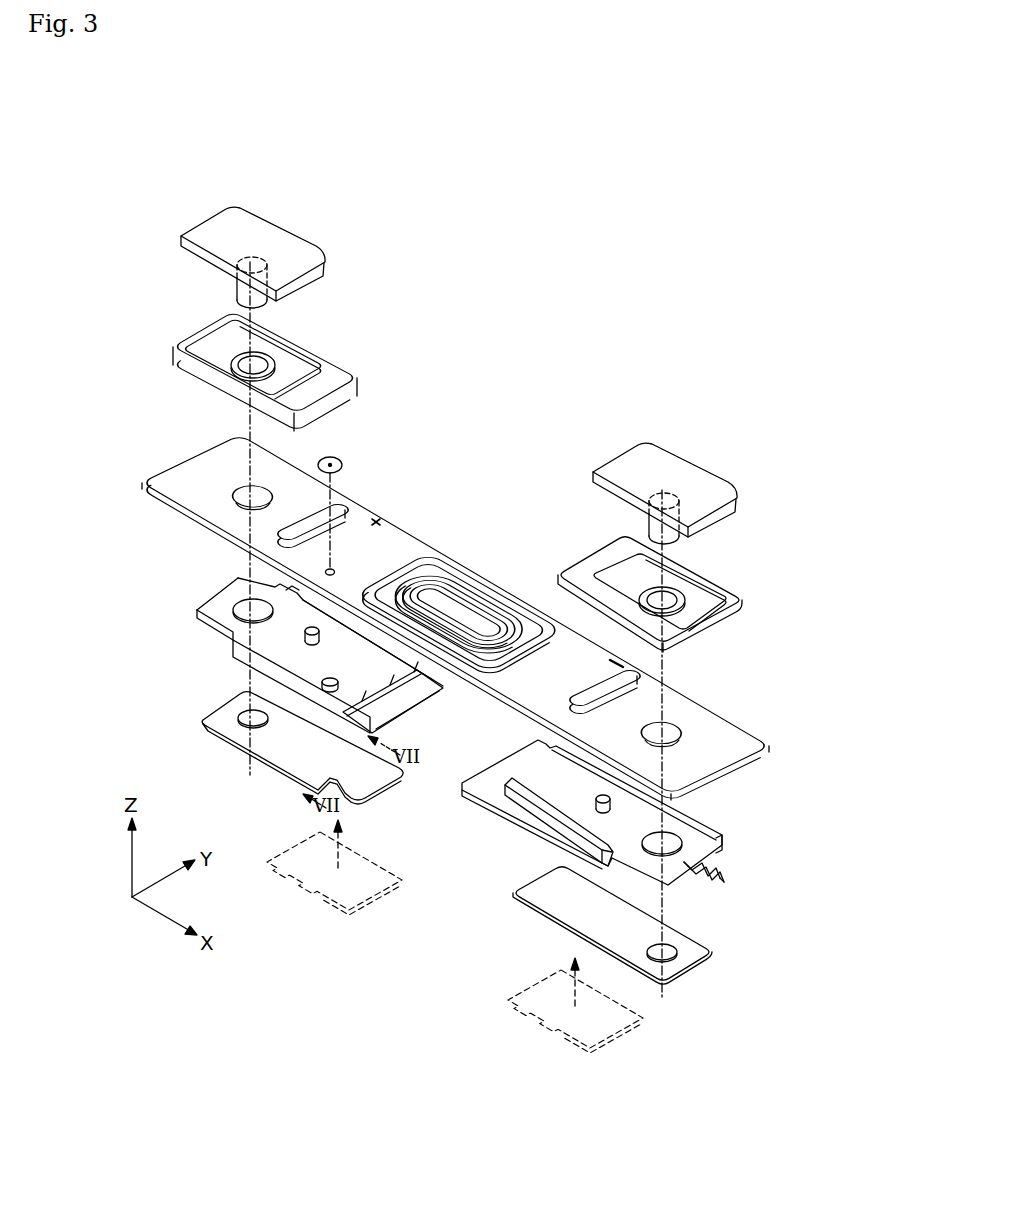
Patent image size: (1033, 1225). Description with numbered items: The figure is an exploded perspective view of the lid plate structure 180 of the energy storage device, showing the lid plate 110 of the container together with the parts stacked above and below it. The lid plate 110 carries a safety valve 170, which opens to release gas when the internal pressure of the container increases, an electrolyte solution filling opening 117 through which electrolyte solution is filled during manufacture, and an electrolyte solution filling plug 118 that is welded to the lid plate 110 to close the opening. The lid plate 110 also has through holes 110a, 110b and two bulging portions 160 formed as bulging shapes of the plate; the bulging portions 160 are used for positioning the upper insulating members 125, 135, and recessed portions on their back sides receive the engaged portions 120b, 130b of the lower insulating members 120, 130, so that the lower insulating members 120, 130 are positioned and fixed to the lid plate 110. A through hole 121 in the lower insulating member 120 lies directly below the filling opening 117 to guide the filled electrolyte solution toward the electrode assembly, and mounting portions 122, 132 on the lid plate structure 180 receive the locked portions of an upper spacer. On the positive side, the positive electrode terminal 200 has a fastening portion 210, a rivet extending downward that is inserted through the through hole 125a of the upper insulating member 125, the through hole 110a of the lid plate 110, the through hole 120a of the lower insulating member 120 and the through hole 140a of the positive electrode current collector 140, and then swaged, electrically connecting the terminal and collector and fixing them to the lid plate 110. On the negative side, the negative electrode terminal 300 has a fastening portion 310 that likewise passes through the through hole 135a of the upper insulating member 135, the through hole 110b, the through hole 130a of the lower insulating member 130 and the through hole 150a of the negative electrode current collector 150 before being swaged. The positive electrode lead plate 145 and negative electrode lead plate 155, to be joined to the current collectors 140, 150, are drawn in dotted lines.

The lid plate 110 is at (702, 722).
The through hole 110a is at (243, 493).
The through hole 110b is at (688, 737).
The electrolyte solution filling opening 117 is at (335, 566).
The electrolyte solution filling plug 118 is at (338, 458).
The lower insulating member 120 is at (205, 603).
The through hole 120a is at (245, 604).
The engaged portion 120b is at (305, 633).
The through hole 121 is at (342, 660).
The mounting portion 122 is at (292, 592).
The upper insulating member 125 is at (338, 376).
The through hole 125a is at (247, 358).
The lower insulating member 130 is at (692, 843).
The through hole 130a is at (665, 840).
The engaged portion 130b is at (600, 795).
The mounting portion 132 is at (722, 856).
The upper insulating member 135 is at (737, 600).
The through hole 135a is at (670, 593).
The positive electrode current collector 140 is at (215, 725).
The through hole 140a is at (247, 712).
The positive electrode lead plate 145 is at (322, 905).
The negative electrode current collector 150 is at (672, 963).
The through hole 150a is at (668, 950).
The negative electrode lead plate 155 is at (578, 1045).
The bulging portion 160 is at (335, 513).
The safety valve 170 is at (455, 620).
The lid plate structure 180 is at (846, 367).
The positive electrode terminal 200 is at (284, 248).
The fastening portion 210 is at (266, 296).
The negative electrode terminal 300 is at (690, 470).
The fastening portion 310 is at (655, 512).